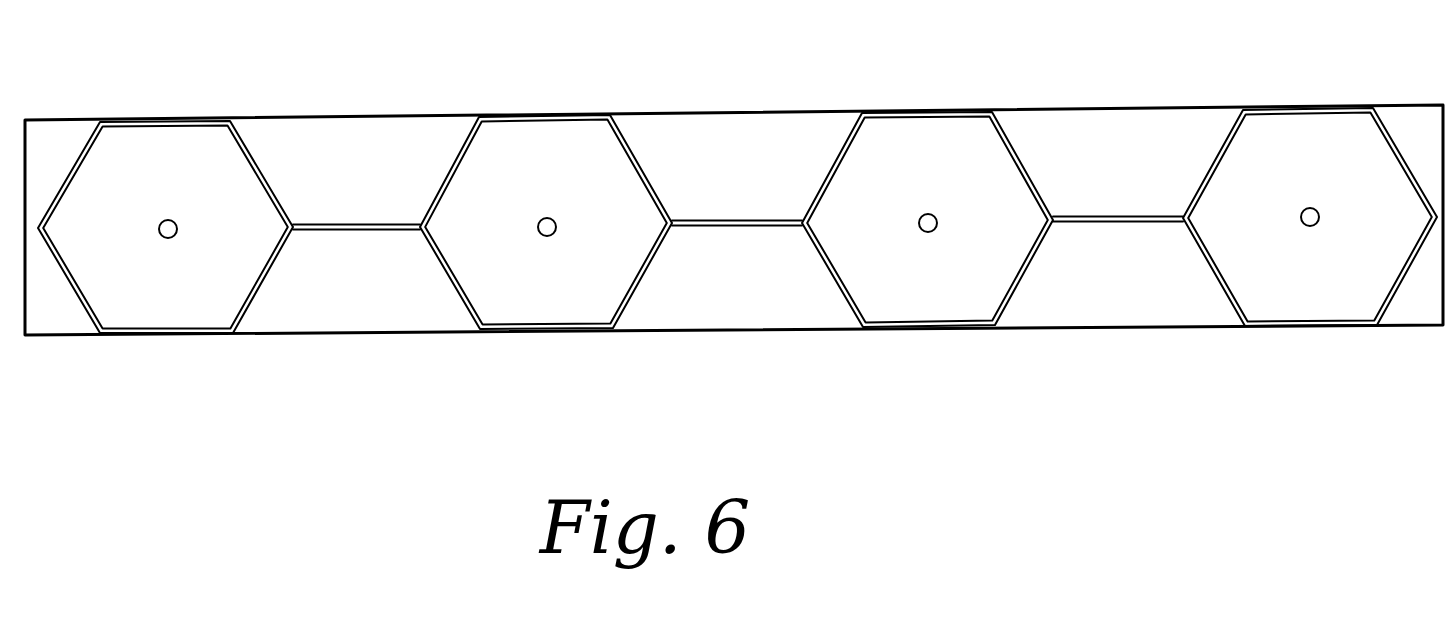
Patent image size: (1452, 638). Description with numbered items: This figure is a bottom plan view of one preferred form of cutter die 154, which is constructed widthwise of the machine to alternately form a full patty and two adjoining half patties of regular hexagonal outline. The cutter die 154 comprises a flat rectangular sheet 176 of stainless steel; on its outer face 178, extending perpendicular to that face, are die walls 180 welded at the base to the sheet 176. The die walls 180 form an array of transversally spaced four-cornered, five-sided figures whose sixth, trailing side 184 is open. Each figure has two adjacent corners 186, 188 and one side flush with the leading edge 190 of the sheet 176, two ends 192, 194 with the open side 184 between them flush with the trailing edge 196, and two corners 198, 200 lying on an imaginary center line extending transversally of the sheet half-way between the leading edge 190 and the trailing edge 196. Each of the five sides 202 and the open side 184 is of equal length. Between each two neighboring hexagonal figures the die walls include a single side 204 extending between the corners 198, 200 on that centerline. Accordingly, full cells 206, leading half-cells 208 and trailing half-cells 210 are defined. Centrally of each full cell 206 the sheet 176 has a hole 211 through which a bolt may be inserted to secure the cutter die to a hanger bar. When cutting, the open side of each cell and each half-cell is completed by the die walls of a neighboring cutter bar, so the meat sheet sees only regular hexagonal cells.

The cutter die 154 is at (386, 112).
The flat rectangular sheet 176 is at (436, 121).
The outer face 178 is at (462, 125).
The die walls 180 is at (286, 186).
The open trailing side 184 is at (177, 337).
The corner 186 is at (104, 118).
The corner 188 is at (232, 118).
The leading edge 190 is at (287, 118).
The end 192 is at (102, 337).
The end 194 is at (308, 370).
The trailing edge 196 is at (307, 333).
The corner 198 is at (47, 232).
The corner 200 is at (290, 227).
The sides 202 is at (143, 128).
The single side 204 is at (317, 224).
The full cells 206 is at (160, 276).
The leading half-cells 208 is at (344, 168).
The trailing half-cells 210 is at (349, 280).
The hole 211 is at (162, 224).